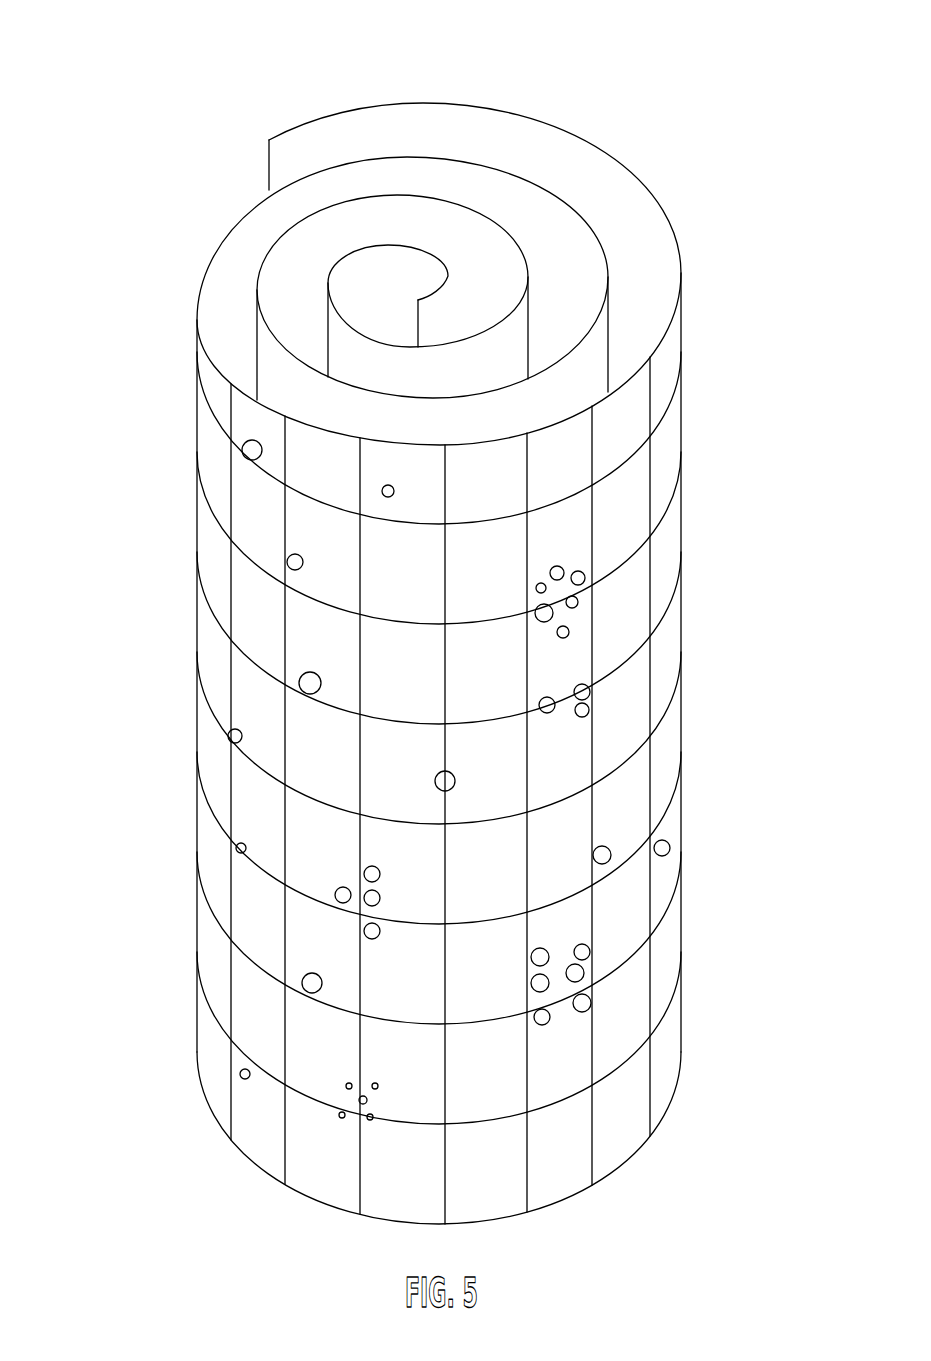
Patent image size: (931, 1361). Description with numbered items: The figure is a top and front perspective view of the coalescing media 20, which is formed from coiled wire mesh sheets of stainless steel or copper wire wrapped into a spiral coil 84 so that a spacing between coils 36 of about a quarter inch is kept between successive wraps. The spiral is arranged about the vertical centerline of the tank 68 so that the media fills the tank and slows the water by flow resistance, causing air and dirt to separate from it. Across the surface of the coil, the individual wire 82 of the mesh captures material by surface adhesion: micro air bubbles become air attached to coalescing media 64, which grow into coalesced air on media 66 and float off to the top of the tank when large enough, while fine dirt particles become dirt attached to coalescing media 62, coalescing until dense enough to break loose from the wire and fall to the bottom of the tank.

The coalescing media 20 is at (435, 621).
The spacing between coils 36 is at (233, 303).
The spiral coil 84 is at (492, 226).
The wire in wire mesh media 82 is at (281, 931).
The vertical centerline of the tank 68 is at (569, 568).
The dirt attached to coalescing media 62 is at (580, 716).
The air attached to coalescing media 64 is at (604, 850).
The coalesced air on media 66 is at (557, 1018).